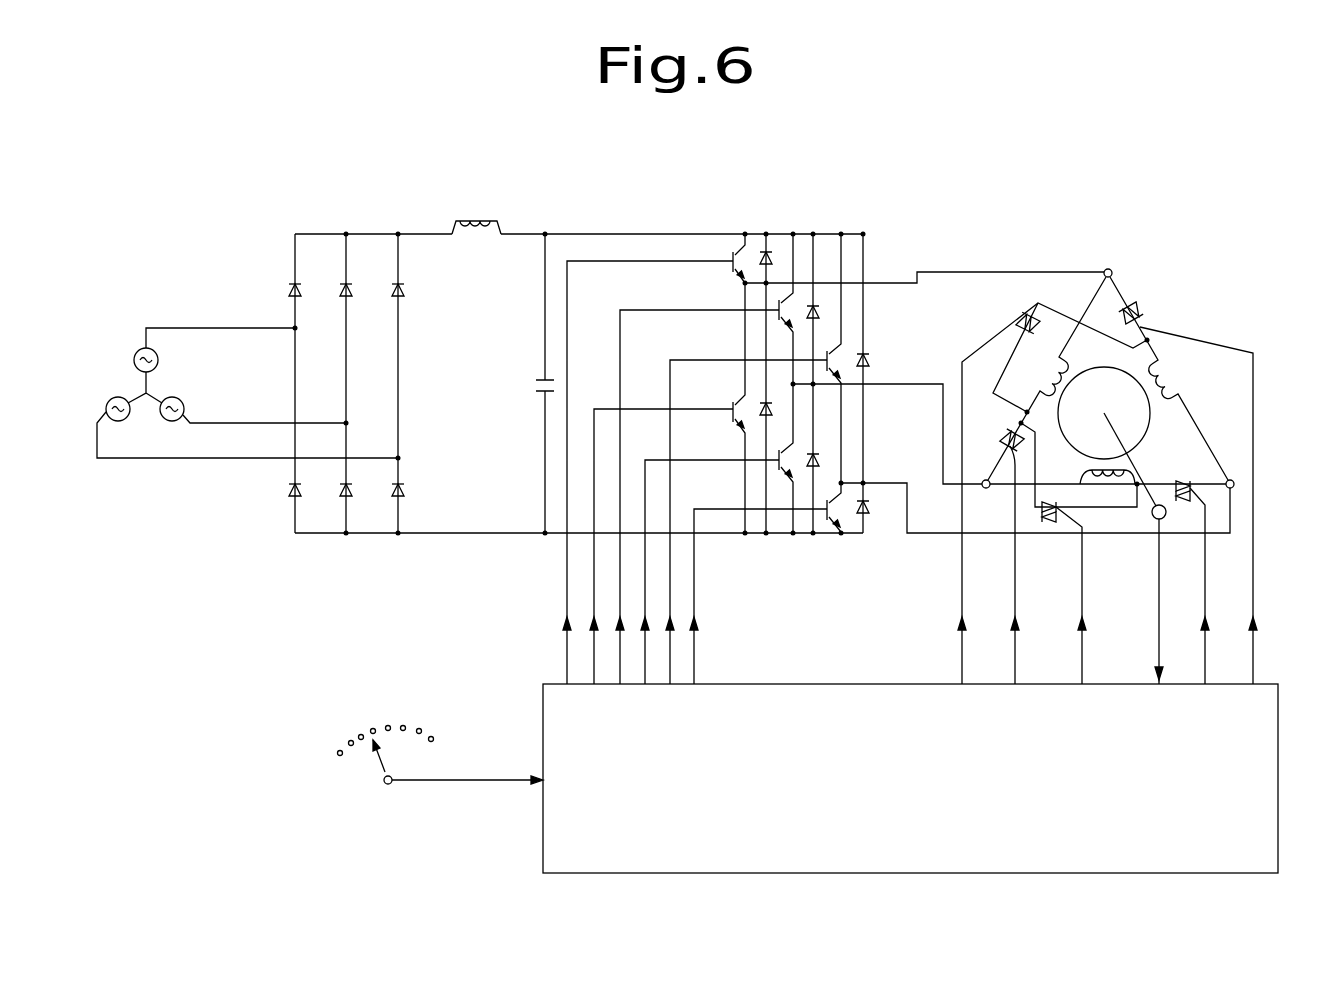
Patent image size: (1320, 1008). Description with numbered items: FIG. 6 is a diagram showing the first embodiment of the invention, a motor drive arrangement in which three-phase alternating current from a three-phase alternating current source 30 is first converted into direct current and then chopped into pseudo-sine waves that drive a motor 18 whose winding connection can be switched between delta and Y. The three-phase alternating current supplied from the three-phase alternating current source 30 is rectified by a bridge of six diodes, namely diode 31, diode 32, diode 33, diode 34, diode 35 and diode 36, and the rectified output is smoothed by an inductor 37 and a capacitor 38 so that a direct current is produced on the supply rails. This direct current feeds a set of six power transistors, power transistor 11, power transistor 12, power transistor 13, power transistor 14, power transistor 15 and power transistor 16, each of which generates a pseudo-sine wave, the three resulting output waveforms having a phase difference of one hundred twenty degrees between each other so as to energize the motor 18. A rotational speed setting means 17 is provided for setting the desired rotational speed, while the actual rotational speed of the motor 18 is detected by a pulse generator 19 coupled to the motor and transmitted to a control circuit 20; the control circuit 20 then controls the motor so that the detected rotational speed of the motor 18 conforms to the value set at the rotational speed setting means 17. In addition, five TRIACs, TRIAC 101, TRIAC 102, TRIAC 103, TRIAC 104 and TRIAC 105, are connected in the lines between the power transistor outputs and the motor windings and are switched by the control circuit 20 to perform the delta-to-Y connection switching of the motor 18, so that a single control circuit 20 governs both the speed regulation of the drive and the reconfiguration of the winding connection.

The power transistor 11 is at (727, 268).
The power transistor 12 is at (725, 403).
The power transistor 13 is at (777, 322).
The power transistor 14 is at (775, 452).
The power transistor 15 is at (825, 352).
The power transistor 16 is at (825, 502).
The rotational speed setting means 17 is at (385, 787).
The motor 18 is at (1085, 365).
The pulse generator 19 is at (1148, 527).
The control circuit 20 is at (822, 683).
The three-phase alternating current source 30 is at (137, 352).
The diode 31 is at (287, 290).
The diode 32 is at (340, 290).
The diode 33 is at (393, 290).
The diode 34 is at (282, 492).
The diode 35 is at (337, 489).
The diode 36 is at (391, 489).
The inductor 37 is at (471, 212).
The capacitor 38 is at (530, 375).
The TRIAC 101 is at (1047, 527).
The TRIAC 102 is at (1022, 318).
The TRIAC 103 is at (1152, 305).
The TRIAC 104 is at (1002, 435).
The TRIAC 105 is at (1180, 477).